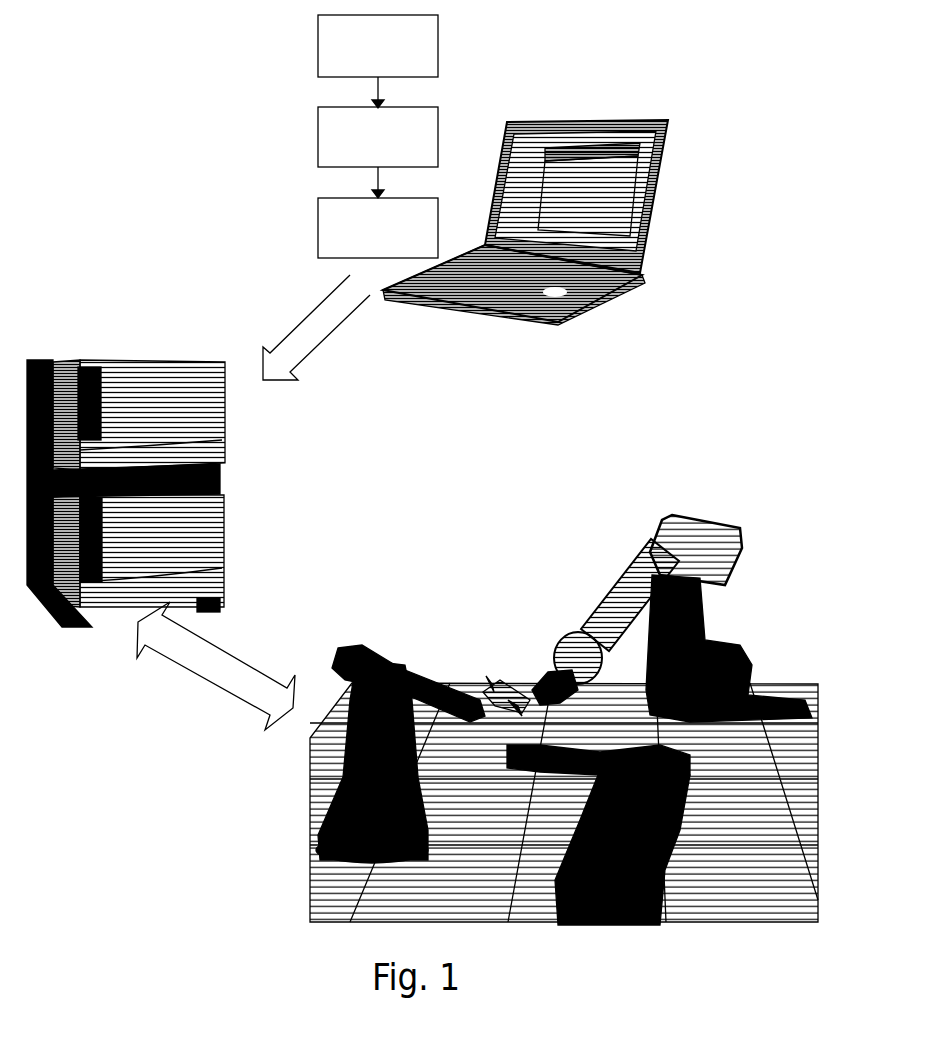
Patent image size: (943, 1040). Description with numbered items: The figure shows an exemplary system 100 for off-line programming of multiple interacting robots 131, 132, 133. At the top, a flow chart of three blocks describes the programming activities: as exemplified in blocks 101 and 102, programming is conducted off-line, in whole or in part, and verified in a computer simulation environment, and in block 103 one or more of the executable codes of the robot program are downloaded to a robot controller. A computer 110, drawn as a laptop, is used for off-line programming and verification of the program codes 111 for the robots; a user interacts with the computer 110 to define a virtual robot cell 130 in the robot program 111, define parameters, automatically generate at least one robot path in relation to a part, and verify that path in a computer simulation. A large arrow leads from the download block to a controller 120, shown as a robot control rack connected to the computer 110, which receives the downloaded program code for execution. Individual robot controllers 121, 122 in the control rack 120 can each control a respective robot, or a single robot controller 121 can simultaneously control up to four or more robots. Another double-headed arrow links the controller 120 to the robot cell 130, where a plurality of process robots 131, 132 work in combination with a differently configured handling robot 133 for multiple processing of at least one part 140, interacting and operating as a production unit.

The system 100 is at (226, 77).
The block 101 is at (440, 43).
The block 102 is at (440, 135).
The block 103 is at (440, 228).
The computer 110 is at (526, 330).
The program codes 111 is at (616, 194).
The controller 120 is at (118, 327).
The robot controller 121 is at (220, 435).
The robot controller 122 is at (217, 535).
The virtual robot cell 130 is at (443, 577).
The process robot 131 is at (408, 668).
The process robot 132 is at (622, 752).
The handling robot 133 is at (638, 570).
The part 140 is at (496, 672).